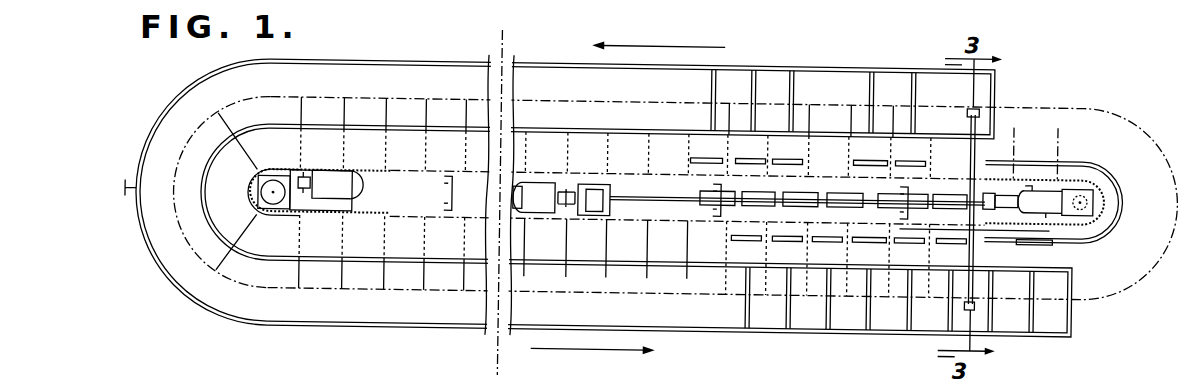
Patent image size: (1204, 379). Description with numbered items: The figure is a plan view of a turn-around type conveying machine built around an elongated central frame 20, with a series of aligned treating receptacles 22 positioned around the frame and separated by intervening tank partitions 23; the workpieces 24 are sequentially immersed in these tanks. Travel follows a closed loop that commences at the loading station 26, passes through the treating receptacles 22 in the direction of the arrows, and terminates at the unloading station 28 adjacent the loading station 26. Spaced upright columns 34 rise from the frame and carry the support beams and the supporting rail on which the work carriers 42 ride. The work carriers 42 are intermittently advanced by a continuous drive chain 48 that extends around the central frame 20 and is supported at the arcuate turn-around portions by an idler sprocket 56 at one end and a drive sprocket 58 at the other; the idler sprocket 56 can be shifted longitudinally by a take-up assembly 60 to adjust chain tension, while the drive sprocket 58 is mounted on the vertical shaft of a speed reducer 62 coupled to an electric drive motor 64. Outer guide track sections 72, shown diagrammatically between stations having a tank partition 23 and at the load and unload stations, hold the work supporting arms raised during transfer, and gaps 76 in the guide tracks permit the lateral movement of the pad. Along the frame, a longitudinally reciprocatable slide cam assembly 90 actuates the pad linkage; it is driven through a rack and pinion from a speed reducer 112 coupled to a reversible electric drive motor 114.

The central frame 20 is at (712, 208).
The treating receptacles 22 is at (160, 223).
The tank partitions 23 is at (755, 71).
The workpieces 24 is at (966, 293).
The loading station 26 is at (1015, 127).
The unloading station 28 is at (1062, 127).
The upright columns 34 is at (456, 203).
The work carriers 42 is at (978, 224).
The drive chain 48 is at (325, 220).
The idler sprocket 56 is at (1100, 169).
The drive sprocket 58 is at (262, 208).
The take-up assembly 60 is at (1055, 207).
The speed reducer 62 is at (288, 173).
The electric drive motor 64 is at (365, 189).
The outer guide track 72 is at (1140, 190).
The gaps 76 is at (778, 157).
The slide cam assembly 90 is at (777, 185).
The speed reducer 112 is at (598, 198).
The reversible electric drive motor 114 is at (540, 181).